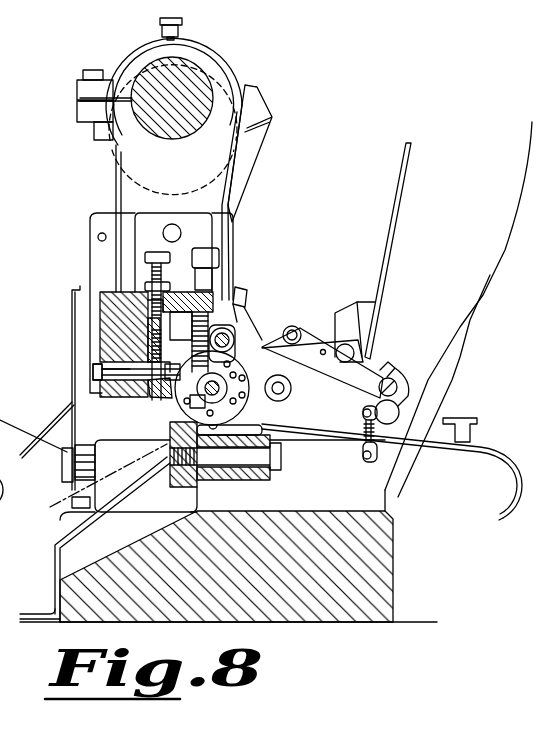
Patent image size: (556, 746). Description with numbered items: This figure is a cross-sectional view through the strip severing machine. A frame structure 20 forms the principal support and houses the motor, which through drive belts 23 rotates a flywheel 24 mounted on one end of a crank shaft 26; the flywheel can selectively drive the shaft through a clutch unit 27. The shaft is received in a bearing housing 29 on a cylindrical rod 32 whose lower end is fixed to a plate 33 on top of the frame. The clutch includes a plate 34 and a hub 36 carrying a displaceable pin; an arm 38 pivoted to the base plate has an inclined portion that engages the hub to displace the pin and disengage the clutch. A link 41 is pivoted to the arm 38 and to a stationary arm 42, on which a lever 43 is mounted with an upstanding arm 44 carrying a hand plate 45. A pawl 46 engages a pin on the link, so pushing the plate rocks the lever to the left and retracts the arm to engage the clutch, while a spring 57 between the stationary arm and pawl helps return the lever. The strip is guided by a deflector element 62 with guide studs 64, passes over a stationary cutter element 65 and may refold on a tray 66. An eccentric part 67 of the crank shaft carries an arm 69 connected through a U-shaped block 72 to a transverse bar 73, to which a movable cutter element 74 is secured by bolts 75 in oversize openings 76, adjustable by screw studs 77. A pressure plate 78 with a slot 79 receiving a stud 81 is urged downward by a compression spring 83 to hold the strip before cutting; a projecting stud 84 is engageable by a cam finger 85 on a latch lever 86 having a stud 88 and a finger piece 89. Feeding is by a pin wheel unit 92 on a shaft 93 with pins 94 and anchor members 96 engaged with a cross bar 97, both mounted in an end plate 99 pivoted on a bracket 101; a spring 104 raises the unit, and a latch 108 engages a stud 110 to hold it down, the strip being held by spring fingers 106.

The frame structure 20 is at (423, 616).
The drive belts 23 is at (395, 503).
The flywheel 24 is at (503, 252).
The crank shaft 26 is at (183, 132).
The clutch unit 27 is at (227, 53).
The bearing housing 29 is at (116, 183).
The cylindrical rod 32 is at (108, 462).
The plate 33 is at (393, 553).
The plate 34 is at (227, 62).
The hub 36 is at (207, 167).
The arm 38 is at (260, 135).
The link 41 is at (240, 300).
The arm 42 is at (264, 338).
The lever 43 is at (339, 309).
The upstanding arm 44 is at (362, 306).
The plate 45 is at (407, 183).
The pawl 46 is at (365, 357).
The spring 57 is at (297, 326).
The deflector element 62 is at (510, 520).
The guide studs 64 is at (467, 436).
The cutter element 65 is at (173, 483).
The tray 66 is at (32, 613).
The eccentric part 67 is at (182, 65).
The arm 69 is at (222, 78).
The U-shaped block 72 is at (167, 215).
The transverse bar 73 is at (108, 297).
The cutter element 74 is at (147, 362).
The bolts 75 is at (95, 378).
The oversize openings 76 is at (90, 382).
The screw studs 77 is at (157, 258).
The pressure plate 78 is at (175, 383).
The slot 79 is at (172, 405).
The stud 81 is at (95, 372).
The compression spring 83 is at (189, 342).
The projecting stud 84 is at (147, 340).
The cam finger 85 is at (147, 317).
The latch lever 86 is at (186, 249).
The stud 88 is at (203, 279).
The finger piece 89 is at (212, 257).
The pin wheel unit 92 is at (260, 380).
The shaft 93 is at (212, 390).
The pins 94 is at (240, 420).
The anchor members 96 is at (234, 350).
The cross bar 97 is at (236, 322).
The end plate 99 is at (332, 387).
The bracket 101 is at (390, 366).
The spring 104 is at (360, 445).
The spring fingers 106 is at (277, 422).
The latch 108 is at (400, 397).
The stud 110 is at (403, 402).